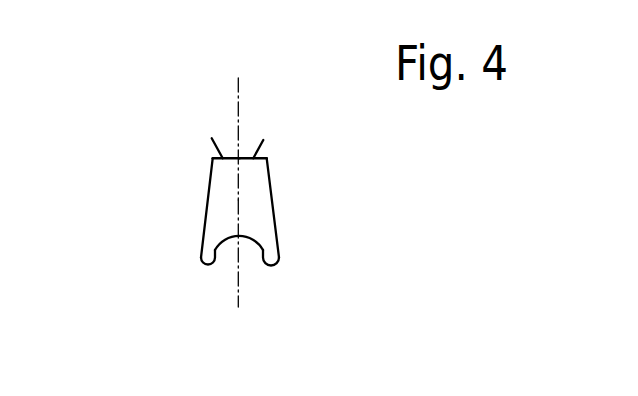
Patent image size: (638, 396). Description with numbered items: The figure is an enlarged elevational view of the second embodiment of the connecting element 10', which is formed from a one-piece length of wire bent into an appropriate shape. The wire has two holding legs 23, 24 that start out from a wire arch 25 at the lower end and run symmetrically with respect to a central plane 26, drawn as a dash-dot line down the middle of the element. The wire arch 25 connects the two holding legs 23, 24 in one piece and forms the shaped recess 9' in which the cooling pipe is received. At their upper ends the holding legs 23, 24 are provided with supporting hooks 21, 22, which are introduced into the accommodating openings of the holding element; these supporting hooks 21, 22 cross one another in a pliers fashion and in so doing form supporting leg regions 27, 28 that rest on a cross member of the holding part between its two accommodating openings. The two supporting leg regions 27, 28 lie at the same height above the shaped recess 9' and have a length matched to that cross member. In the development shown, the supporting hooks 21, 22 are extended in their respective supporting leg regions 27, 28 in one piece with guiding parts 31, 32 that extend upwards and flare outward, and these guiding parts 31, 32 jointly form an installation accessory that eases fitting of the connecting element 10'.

The connecting element 10' is at (203, 193).
The supporting hook 21 is at (213, 158).
The supporting hook 22 is at (267, 158).
The holding leg 23 is at (204, 230).
The holding leg 24 is at (273, 208).
The wire arch 25 is at (228, 213).
The central plane 26 is at (239, 92).
The supporting leg region 27 is at (229, 145).
The supporting leg region 28 is at (250, 89).
The guiding part 31 is at (212, 138).
The guiding part 32 is at (263, 140).
The shaped recess 9' is at (258, 283).